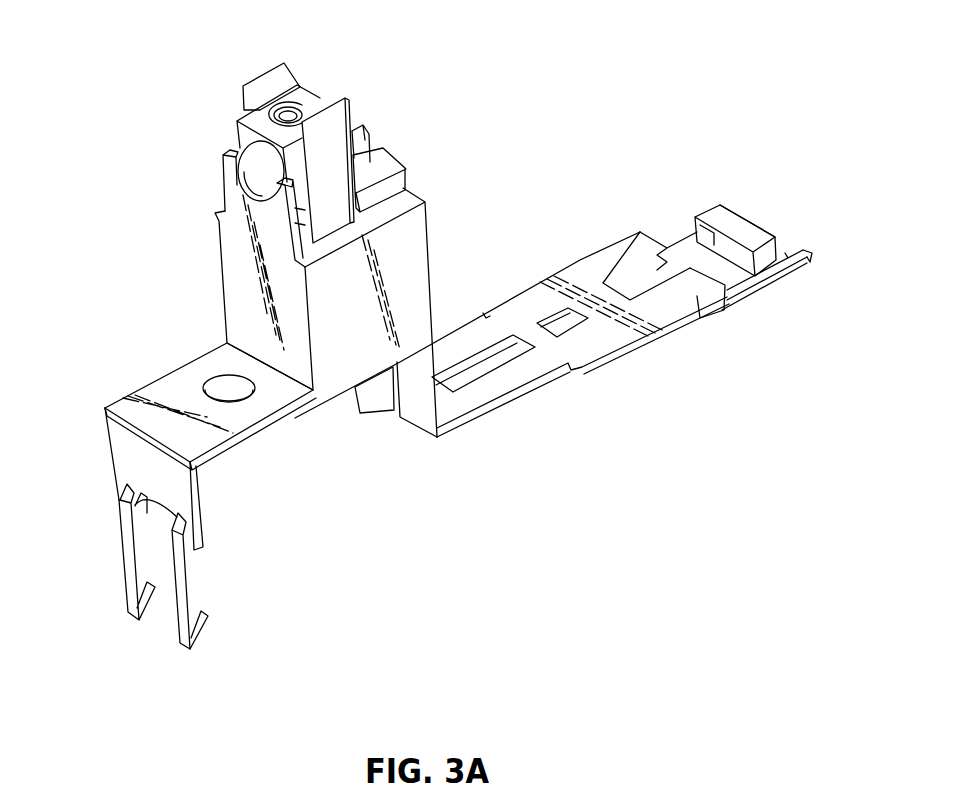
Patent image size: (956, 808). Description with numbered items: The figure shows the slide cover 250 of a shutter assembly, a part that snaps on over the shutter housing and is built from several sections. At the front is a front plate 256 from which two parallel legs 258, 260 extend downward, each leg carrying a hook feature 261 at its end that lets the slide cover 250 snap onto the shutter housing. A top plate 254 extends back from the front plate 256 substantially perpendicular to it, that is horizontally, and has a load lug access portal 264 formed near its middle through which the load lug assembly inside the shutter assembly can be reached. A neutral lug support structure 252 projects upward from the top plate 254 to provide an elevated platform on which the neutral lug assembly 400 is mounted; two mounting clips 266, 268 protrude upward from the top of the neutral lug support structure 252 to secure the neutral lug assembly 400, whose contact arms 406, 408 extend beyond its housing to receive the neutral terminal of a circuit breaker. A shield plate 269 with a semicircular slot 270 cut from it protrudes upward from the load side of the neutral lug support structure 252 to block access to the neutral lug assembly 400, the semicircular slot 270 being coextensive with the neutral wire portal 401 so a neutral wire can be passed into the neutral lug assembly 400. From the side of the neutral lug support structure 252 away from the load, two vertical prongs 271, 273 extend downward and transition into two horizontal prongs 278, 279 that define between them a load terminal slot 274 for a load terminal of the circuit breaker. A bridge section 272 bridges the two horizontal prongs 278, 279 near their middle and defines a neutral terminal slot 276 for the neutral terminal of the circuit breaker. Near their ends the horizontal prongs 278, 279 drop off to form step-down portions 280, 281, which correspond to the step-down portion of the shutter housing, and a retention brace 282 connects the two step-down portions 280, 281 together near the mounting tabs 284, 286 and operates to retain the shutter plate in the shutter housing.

The slide cover 250 is at (362, 337).
The neutral lug support structure 252 is at (233, 240).
The top plate 254 is at (158, 398).
The front plate 256 is at (123, 452).
The parallel leg 258 is at (128, 572).
The parallel leg 260 is at (180, 603).
The hook feature 261 is at (200, 632).
The load lug access portal 264 is at (229, 391).
The mounting clip 266 is at (263, 72).
The mounting clip 268 is at (322, 108).
The shield plate 269 is at (233, 188).
The semicircular slot 270 is at (236, 160).
The vertical prong 271 is at (377, 397).
The bridge section 272 is at (590, 275).
The vertical prong 273 is at (420, 418).
The load terminal slot 274 is at (486, 365).
The neutral terminal slot 276 is at (553, 323).
The horizontal prong 278 is at (637, 258).
The horizontal prong 279 is at (673, 297).
The step-down portion 280 is at (785, 267).
The step-down portion 281 is at (680, 240).
The retention brace 282 is at (713, 220).
The mounting tab 284 is at (740, 215).
The mounting tab 286 is at (805, 252).
The neutral lug assembly 400 is at (231, 133).
The neutral wire portal 401 is at (266, 160).
The contact arm 406 is at (357, 128).
The contact arm 408 is at (380, 155).